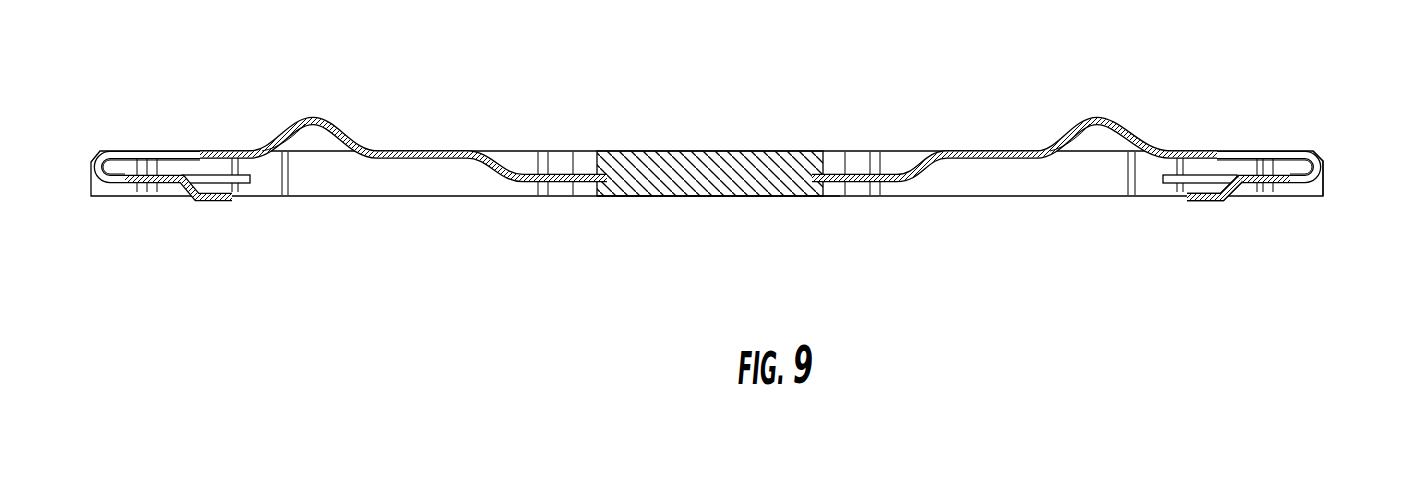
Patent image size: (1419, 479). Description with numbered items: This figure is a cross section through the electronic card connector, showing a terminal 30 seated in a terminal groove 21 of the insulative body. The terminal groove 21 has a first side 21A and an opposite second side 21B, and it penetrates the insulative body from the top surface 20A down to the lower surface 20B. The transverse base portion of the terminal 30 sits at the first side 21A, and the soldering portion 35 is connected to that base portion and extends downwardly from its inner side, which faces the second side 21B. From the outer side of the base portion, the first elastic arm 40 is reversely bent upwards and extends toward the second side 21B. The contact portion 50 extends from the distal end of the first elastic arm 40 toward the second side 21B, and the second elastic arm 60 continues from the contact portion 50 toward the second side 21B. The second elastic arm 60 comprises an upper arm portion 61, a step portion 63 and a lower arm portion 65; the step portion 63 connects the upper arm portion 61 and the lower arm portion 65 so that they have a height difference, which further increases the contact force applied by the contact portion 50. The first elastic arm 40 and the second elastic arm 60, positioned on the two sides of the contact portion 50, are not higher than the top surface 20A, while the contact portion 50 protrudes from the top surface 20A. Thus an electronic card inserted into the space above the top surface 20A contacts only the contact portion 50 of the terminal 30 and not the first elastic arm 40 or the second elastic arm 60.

The top surface 20A is at (690, 150).
The lower surface 20B is at (712, 197).
The terminal groove 21 is at (1093, 180).
The first side 21A is at (1323, 178).
The second side 21B is at (830, 196).
The terminal 30 is at (226, 155).
The soldering portion 35 is at (1199, 201).
The first elastic arm 40 is at (1252, 152).
The contact portion 50 is at (1100, 118).
The second elastic arm 60 is at (924, 98).
The upper arm portion 61 is at (992, 116).
The step portion 63 is at (920, 150).
The lower arm portion 65 is at (855, 172).